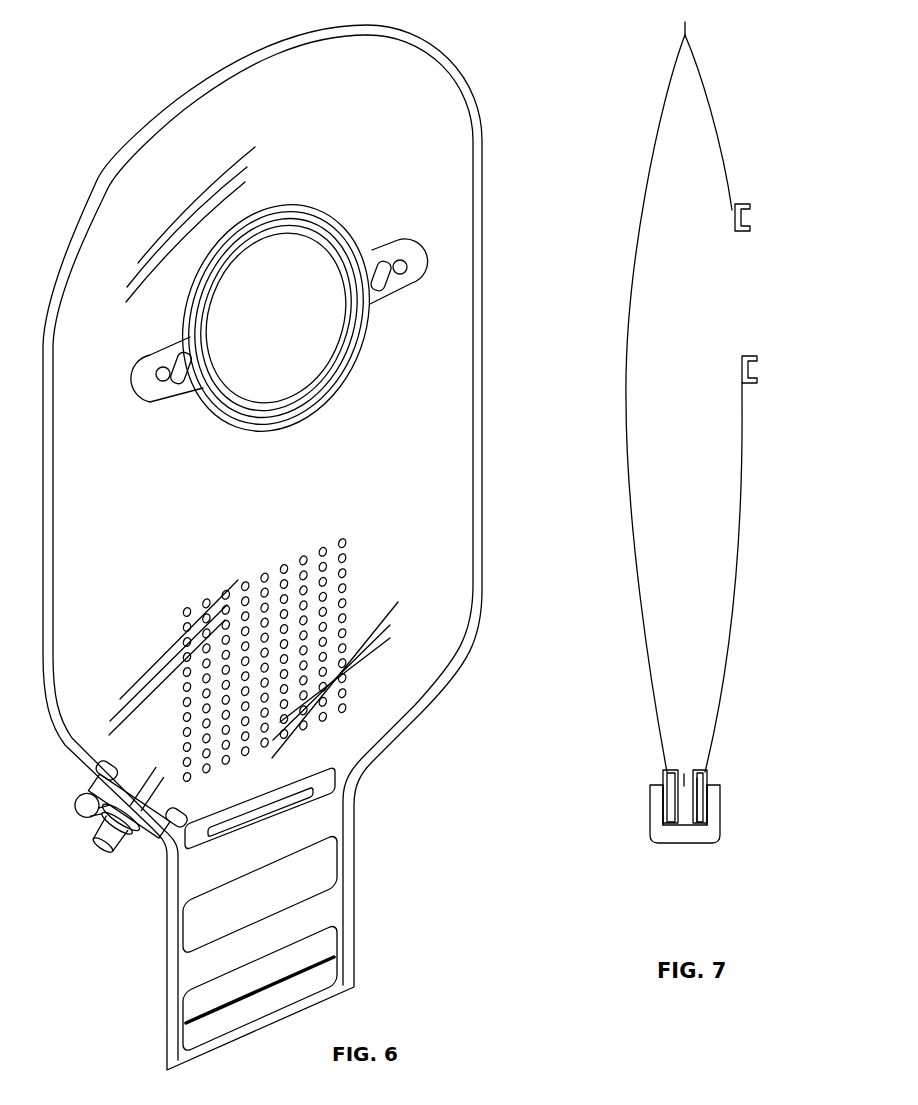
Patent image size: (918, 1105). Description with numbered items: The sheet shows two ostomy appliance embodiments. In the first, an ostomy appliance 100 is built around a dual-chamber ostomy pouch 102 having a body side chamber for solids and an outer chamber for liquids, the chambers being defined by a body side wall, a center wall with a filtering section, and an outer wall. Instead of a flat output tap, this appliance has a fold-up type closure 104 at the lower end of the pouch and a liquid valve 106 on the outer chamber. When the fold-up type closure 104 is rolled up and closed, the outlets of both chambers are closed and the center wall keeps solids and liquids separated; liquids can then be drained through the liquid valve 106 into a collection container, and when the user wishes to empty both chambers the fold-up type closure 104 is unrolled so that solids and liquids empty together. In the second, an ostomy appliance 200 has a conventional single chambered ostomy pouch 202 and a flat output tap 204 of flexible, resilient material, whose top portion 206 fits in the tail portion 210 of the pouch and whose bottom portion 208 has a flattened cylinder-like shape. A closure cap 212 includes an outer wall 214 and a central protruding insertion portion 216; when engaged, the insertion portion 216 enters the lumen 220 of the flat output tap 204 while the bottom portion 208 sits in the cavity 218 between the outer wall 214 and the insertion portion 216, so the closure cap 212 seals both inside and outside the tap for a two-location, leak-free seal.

In FIG. 6, the ostomy appliance 100 is at (290, 547).
In FIG. 6, the dual-chamber ostomy pouch 102 is at (452, 205).
In FIG. 6, the fold-up type closure 104 is at (325, 905).
In FIG. 6, the liquid valve 106 is at (87, 847).
In FIG. 7, the ostomy appliance 200 is at (688, 453).
In FIG. 7, the ostomy pouch 202 is at (722, 160).
In FIG. 7, the flat output tap 204 is at (703, 780).
In FIG. 7, the top portion 206 is at (705, 772).
In FIG. 7, the bottom portion 208 is at (713, 802).
In FIG. 7, the tail portion 210 is at (665, 773).
In FIG. 7, the closure cap 212 is at (690, 838).
In FIG. 7, the outer wall 214 is at (698, 813).
In FIG. 7, the insertion portion 216 is at (684, 776).
In FIG. 7, the cavity 218 is at (661, 787).
In FIG. 7, the lumen 220 is at (660, 780).